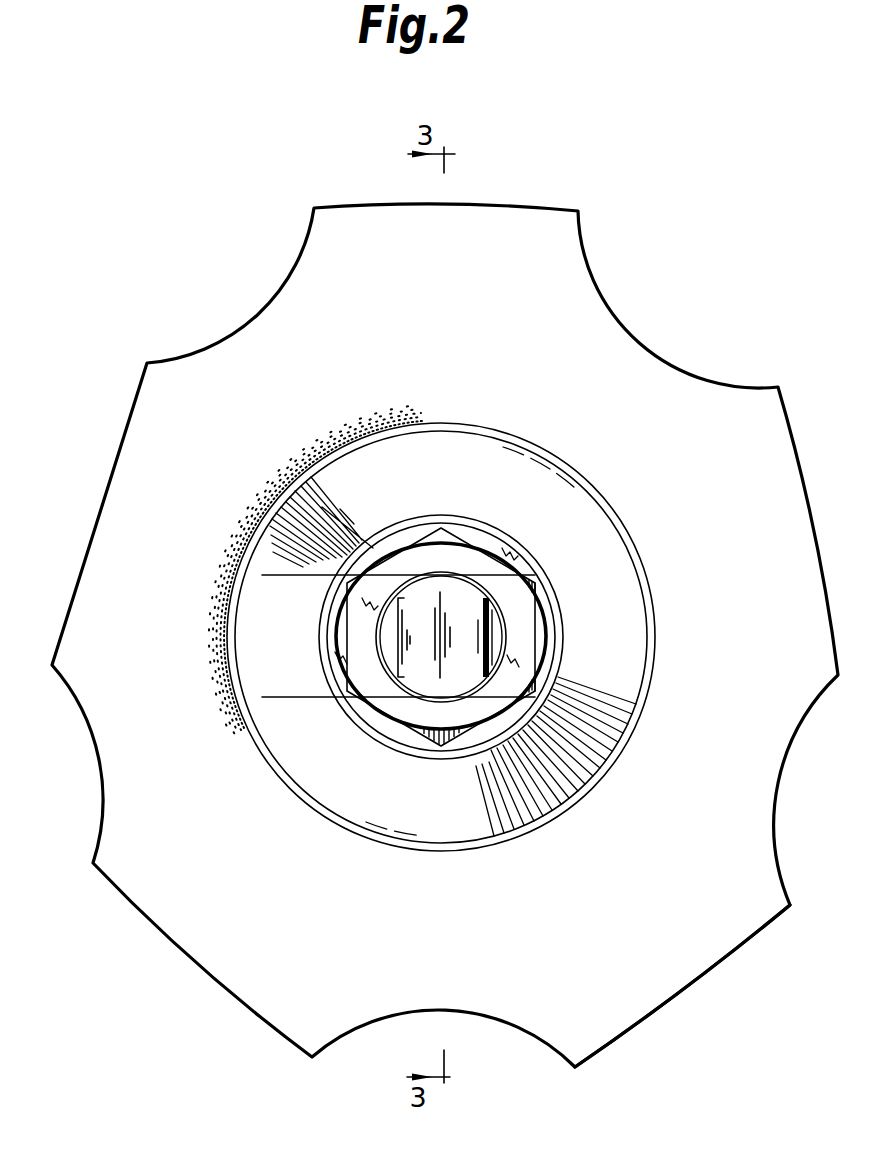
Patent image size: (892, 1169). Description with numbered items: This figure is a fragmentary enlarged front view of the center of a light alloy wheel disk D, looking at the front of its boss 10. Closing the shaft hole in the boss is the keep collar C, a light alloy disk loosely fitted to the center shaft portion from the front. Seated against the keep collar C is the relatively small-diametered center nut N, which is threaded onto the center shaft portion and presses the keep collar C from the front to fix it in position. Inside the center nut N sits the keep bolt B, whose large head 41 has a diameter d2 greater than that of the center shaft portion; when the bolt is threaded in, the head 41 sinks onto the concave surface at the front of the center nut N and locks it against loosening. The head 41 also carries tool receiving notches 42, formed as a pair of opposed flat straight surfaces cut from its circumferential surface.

The boss 10 is at (645, 372).
The keep bolt B is at (450, 572).
The head 41 is at (471, 602).
The tool receiving notches 42 is at (488, 634).
The keep collar C is at (647, 707).
The center nut N is at (418, 734).
The wheel disk D is at (716, 964).
The diameter d2 is at (270, 582).